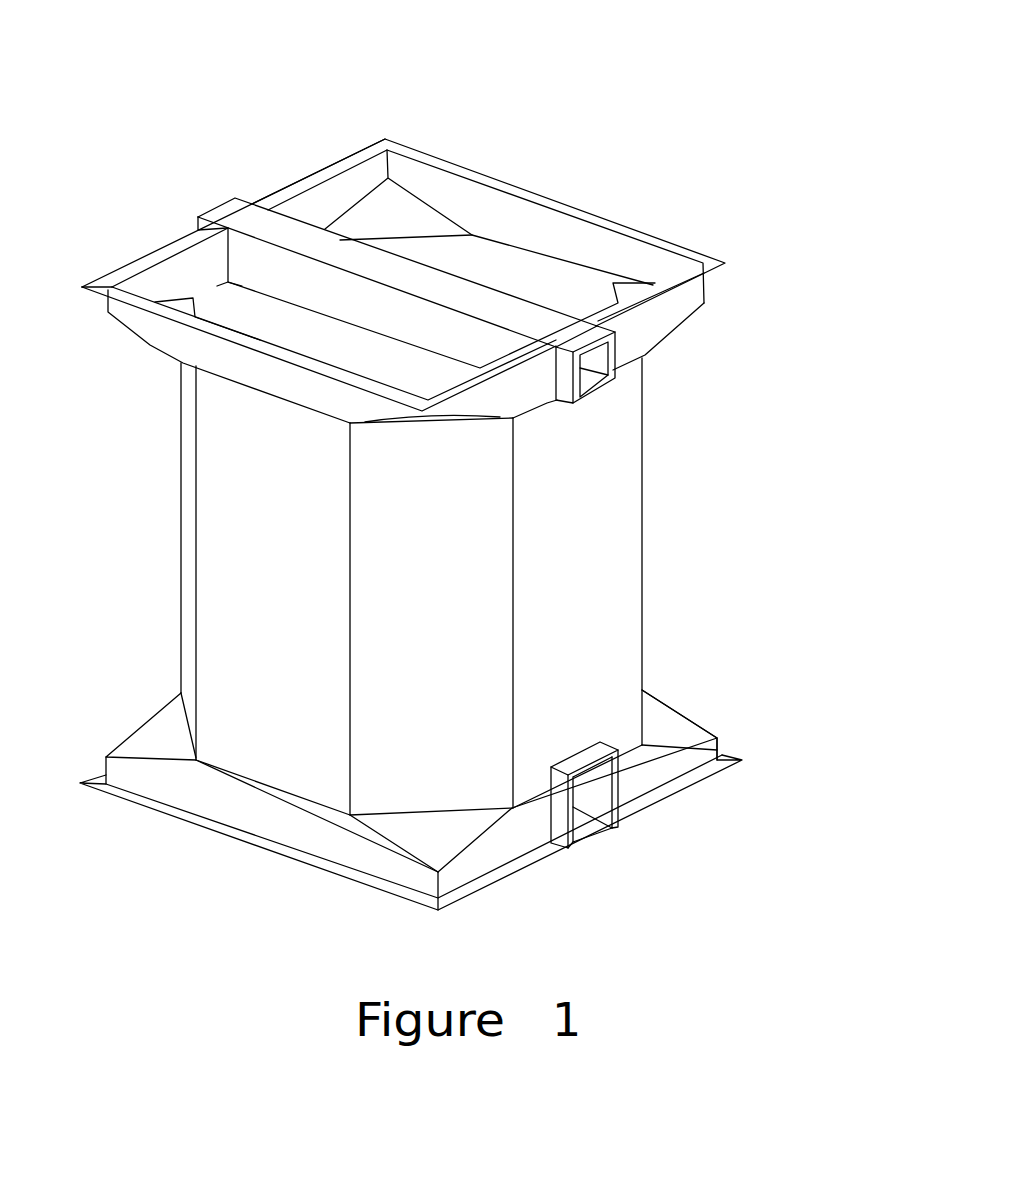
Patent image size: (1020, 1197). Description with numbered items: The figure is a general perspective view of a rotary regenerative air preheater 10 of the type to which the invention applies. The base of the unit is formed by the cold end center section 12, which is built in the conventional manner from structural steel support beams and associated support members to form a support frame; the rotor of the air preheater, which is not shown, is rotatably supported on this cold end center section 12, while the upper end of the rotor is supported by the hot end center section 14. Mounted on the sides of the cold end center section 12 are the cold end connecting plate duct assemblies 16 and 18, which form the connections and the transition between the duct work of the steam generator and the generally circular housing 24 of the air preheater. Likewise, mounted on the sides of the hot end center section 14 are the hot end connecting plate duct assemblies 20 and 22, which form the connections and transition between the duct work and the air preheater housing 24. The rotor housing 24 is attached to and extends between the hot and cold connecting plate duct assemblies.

The rotary regenerative air preheater 10 is at (583, 120).
The cold end center section 12 is at (583, 825).
The hot end center section 14 is at (235, 212).
The cold end connecting plate duct assembly 16 is at (205, 793).
The cold end connecting plate duct assembly 18 is at (690, 760).
The hot end connecting plate duct assembly 20 is at (180, 338).
The hot end connecting plate duct assembly 22 is at (598, 246).
The rotor housing 24 is at (237, 522).